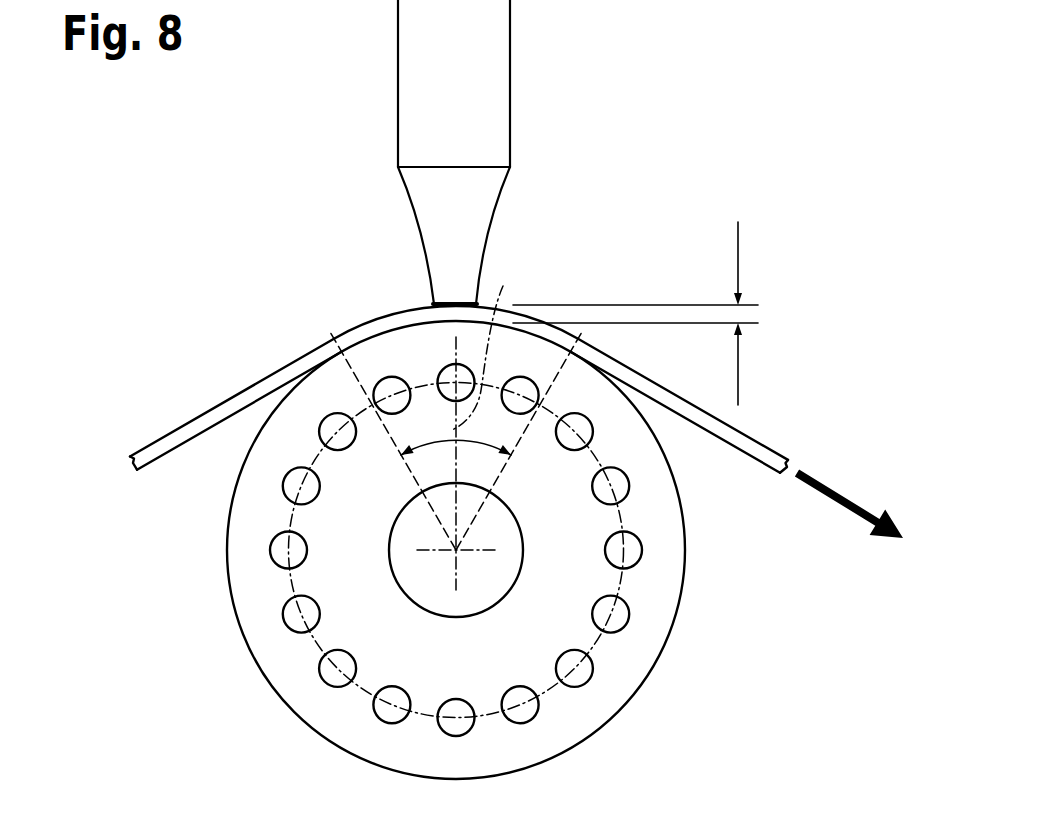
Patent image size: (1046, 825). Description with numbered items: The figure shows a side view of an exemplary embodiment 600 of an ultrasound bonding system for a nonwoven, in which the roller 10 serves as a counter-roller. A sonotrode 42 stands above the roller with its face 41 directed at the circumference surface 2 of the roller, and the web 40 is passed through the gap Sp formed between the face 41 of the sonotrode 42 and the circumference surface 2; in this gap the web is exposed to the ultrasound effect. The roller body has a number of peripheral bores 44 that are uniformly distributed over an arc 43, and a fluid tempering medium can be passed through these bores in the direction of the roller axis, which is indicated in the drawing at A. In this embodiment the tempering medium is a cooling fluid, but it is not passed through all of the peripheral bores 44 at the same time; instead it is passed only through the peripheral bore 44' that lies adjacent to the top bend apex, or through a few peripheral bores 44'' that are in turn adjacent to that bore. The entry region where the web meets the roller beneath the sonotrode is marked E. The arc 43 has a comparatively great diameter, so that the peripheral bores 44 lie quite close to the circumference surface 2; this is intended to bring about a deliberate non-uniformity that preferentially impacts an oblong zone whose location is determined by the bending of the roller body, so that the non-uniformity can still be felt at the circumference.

The exemplary embodiment of ultrasound bonding system 600 is at (661, 192).
The sonotrode 42 is at (482, 100).
The face of sonotrode 41 is at (461, 300).
The circumference surface 2 is at (682, 600).
The roller 10 is at (632, 658).
The roller axis A is at (455, 552).
The arc 43 is at (552, 697).
The peripheral bores 44 is at (470, 600).
The peripheral bore adjacent to top bend apex 44' is at (425, 327).
The peripheral bores adjacent to bore 44' 44'' is at (463, 334).
The web 40 is at (242, 402).
The thread entry path E is at (488, 342).
The gap Sp is at (752, 316).